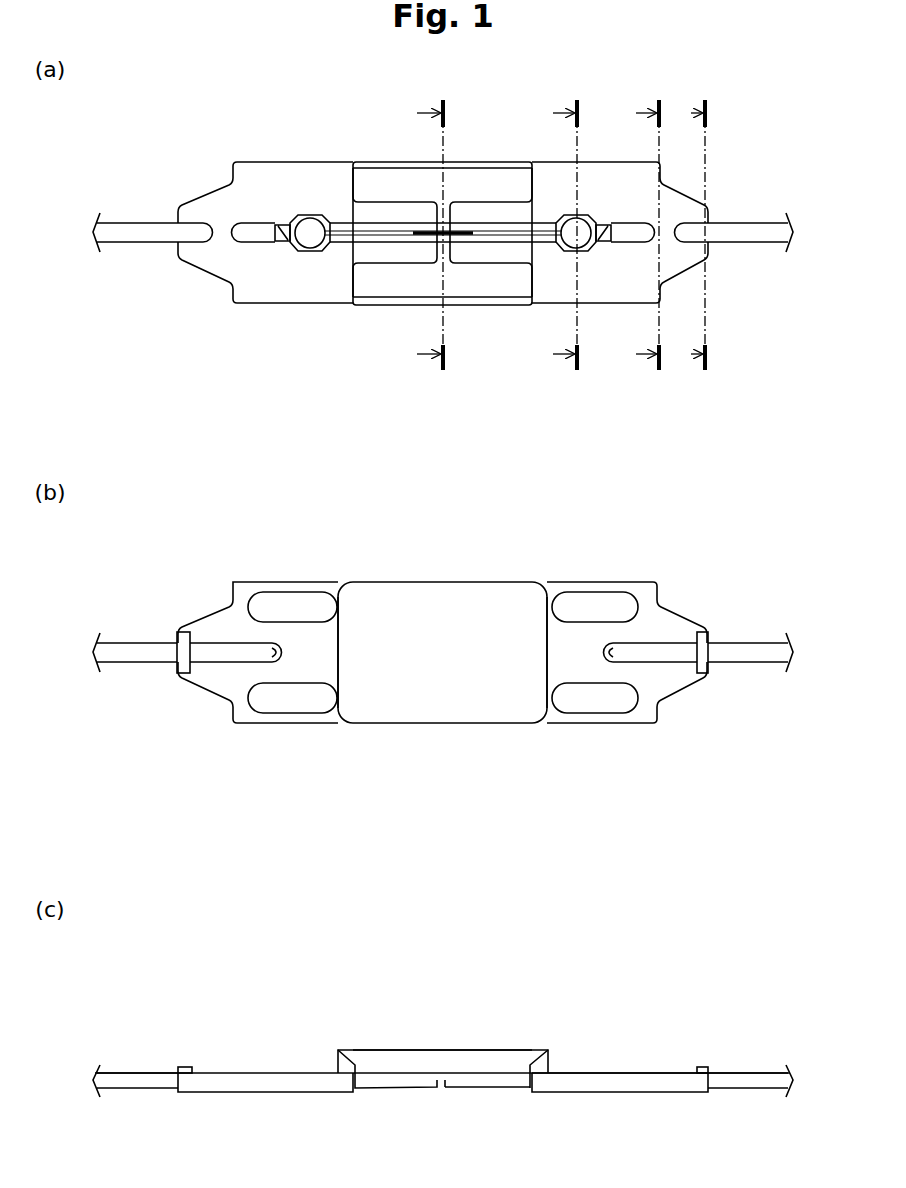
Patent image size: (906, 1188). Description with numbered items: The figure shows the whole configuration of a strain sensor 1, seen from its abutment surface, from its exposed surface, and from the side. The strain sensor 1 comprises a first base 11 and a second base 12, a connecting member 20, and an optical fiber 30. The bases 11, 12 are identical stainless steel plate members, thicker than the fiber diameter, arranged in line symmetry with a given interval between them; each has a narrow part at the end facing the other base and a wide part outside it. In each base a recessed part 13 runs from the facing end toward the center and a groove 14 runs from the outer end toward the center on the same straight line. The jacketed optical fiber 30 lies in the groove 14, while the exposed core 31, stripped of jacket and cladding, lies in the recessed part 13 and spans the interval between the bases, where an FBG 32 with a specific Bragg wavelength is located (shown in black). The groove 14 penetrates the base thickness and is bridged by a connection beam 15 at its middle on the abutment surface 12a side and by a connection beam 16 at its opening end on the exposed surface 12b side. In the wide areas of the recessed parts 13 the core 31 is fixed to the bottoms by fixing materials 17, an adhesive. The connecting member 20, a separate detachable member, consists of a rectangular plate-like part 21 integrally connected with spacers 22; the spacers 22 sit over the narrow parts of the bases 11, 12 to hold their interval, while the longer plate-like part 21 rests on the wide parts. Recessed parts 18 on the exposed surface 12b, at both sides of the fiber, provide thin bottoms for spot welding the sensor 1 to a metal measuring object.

The strain sensor 1 is at (203, 138).
The first base 11 is at (290, 161).
The second base 12 is at (538, 161).
The abutment surface 12a is at (573, 1093).
The exposed surface 12b is at (620, 1072).
The recessed part 13 is at (358, 243).
The groove 14 is at (194, 240).
The connection beam 15 is at (241, 228).
The connection beam 16 is at (182, 630).
The fixing material 17 is at (308, 249).
The recessed part for spot welding 18 is at (291, 600).
The connecting member 20 is at (371, 160).
The plate-like part 21 is at (462, 688).
The spacer 22 is at (503, 161).
The optical fiber 30 is at (148, 223).
The core 31 is at (287, 243).
The FBG 32 is at (455, 246).